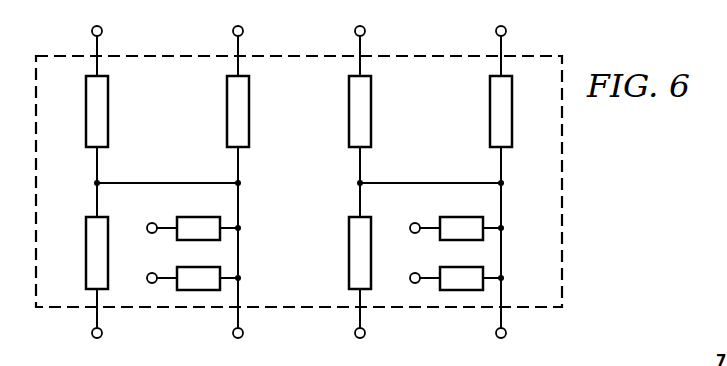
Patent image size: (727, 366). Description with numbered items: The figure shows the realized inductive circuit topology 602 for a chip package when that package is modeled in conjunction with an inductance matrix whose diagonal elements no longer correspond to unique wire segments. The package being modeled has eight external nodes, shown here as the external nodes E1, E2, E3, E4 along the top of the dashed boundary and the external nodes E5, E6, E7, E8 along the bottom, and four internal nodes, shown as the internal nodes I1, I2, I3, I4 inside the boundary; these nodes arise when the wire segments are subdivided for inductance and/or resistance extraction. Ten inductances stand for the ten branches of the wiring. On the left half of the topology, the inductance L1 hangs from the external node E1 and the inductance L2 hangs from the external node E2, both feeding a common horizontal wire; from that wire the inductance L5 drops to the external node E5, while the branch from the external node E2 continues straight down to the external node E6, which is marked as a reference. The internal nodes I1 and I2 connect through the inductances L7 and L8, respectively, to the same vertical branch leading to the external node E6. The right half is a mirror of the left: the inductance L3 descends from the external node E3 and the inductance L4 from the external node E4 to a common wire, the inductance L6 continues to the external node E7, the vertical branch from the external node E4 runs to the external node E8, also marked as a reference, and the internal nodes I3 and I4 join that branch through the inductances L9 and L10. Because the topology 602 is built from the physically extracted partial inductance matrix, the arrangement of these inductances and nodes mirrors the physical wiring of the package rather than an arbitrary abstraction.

The realized inductive circuit topology 602 is at (562, 191).
The inductance L1 is at (107, 129).
The inductance L2 is at (248, 202).
The inductance L3 is at (370, 129).
The inductance L4 is at (511, 202).
The inductance L5 is at (85, 255).
The inductance L6 is at (348, 255).
The inductance L7 is at (209, 216).
The inductance L8 is at (209, 266).
The inductance L9 is at (472, 216).
The inductance L10 is at (472, 266).
The external node E1 is at (97, 38).
The external node E2 is at (238, 38).
The external node E3 is at (360, 38).
The external node E4 is at (501, 38).
The external node E5 is at (97, 347).
The external node E6 is at (255, 344).
The external node E7 is at (360, 347).
The external node E8 is at (518, 344).
The internal node I1 is at (153, 228).
The internal node I2 is at (153, 278).
The internal node I3 is at (416, 228).
The internal node I4 is at (416, 278).